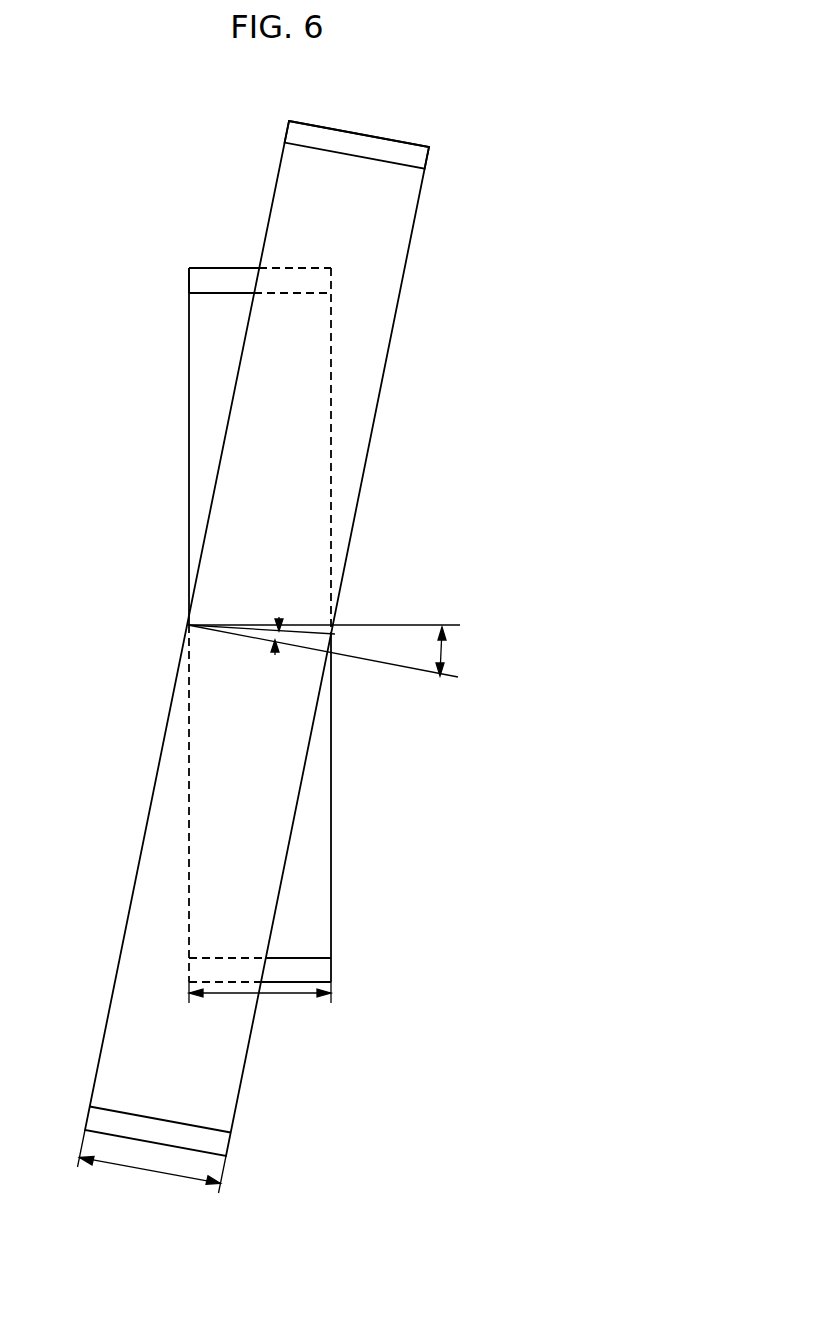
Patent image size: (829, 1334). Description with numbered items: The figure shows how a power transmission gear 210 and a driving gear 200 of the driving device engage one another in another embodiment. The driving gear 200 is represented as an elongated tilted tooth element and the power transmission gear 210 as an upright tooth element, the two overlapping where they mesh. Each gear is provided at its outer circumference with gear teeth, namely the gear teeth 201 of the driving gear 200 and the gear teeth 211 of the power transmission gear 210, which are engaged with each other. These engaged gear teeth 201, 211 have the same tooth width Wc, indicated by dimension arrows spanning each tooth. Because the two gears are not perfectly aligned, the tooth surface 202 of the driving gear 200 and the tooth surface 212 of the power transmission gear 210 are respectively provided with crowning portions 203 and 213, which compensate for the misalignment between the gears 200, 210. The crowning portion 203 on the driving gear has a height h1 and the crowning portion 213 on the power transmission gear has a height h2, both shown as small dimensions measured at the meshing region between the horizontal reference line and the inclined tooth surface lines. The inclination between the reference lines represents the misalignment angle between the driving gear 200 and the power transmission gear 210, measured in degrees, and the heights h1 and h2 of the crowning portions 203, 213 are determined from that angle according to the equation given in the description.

The driving gear 200 is at (382, 340).
The gear teeth 201 is at (366, 146).
The tooth surface 202 is at (313, 644).
The crowning portion 203 is at (275, 655).
The power transmission gear 210 is at (320, 818).
The gear teeth 211 is at (210, 282).
The tooth surface 212 is at (315, 631).
The crowning portion 213 is at (279, 617).
The height of crowning portion h1 is at (252, 635).
The height of crowning portion h2 is at (252, 635).
The tooth width Wc is at (205, 1090).